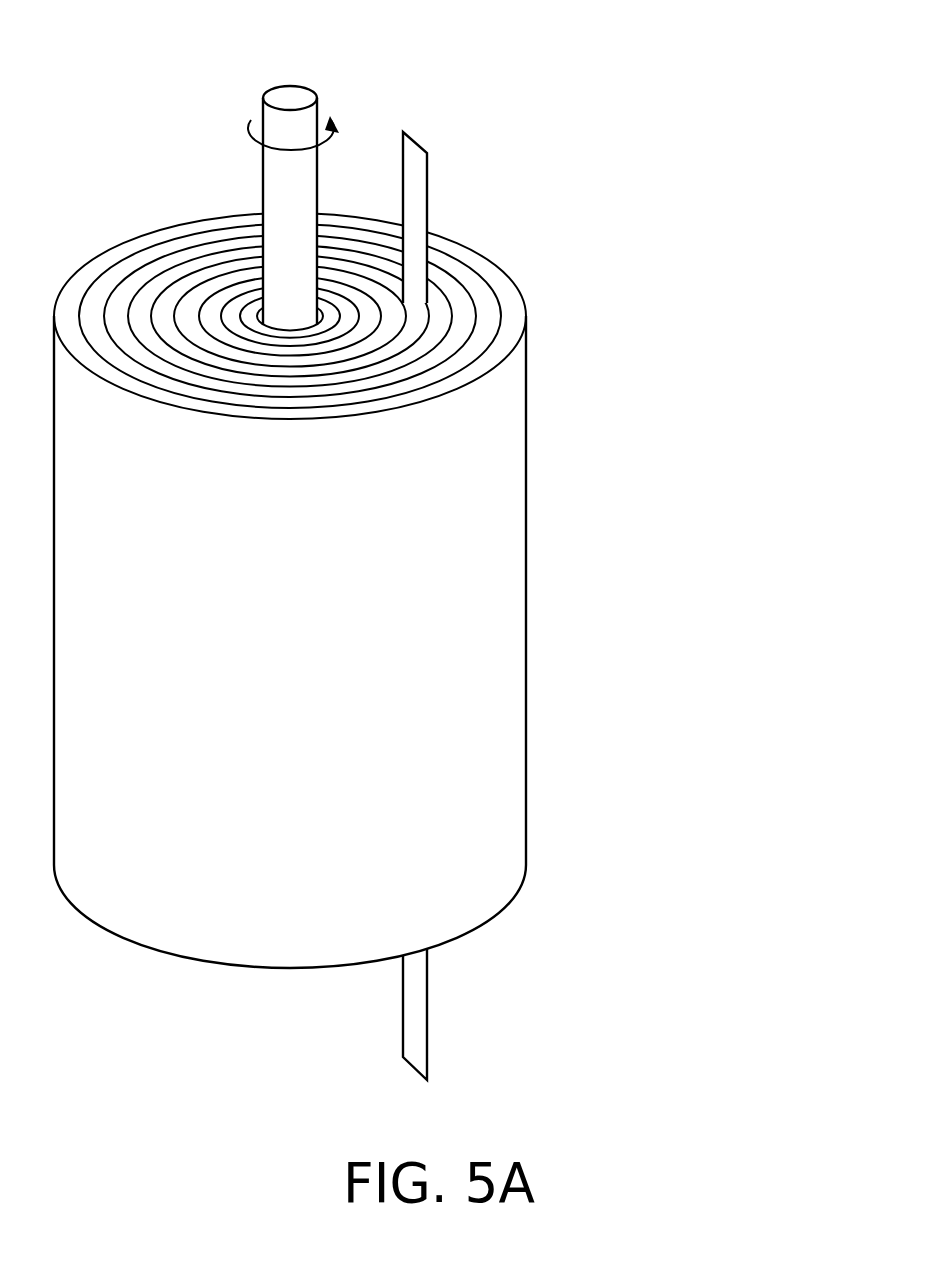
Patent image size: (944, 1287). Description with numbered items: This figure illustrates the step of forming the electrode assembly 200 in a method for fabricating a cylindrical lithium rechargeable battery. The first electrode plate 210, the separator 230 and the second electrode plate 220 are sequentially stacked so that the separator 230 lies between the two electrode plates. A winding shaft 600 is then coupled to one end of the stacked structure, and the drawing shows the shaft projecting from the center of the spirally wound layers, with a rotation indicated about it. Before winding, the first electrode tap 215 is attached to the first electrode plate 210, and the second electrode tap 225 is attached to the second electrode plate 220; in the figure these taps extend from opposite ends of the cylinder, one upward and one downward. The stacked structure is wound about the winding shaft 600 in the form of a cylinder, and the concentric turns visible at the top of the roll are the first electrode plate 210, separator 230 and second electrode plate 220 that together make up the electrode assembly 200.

The electrode assembly 200 is at (626, 584).
The winding shaft 600 is at (292, 98).
The first electrode tap 215 is at (412, 172).
The second electrode tap 225 is at (412, 1000).
The first electrode plate 210 is at (462, 293).
The second electrode plate 220 is at (487, 312).
The separator 230 is at (498, 348).